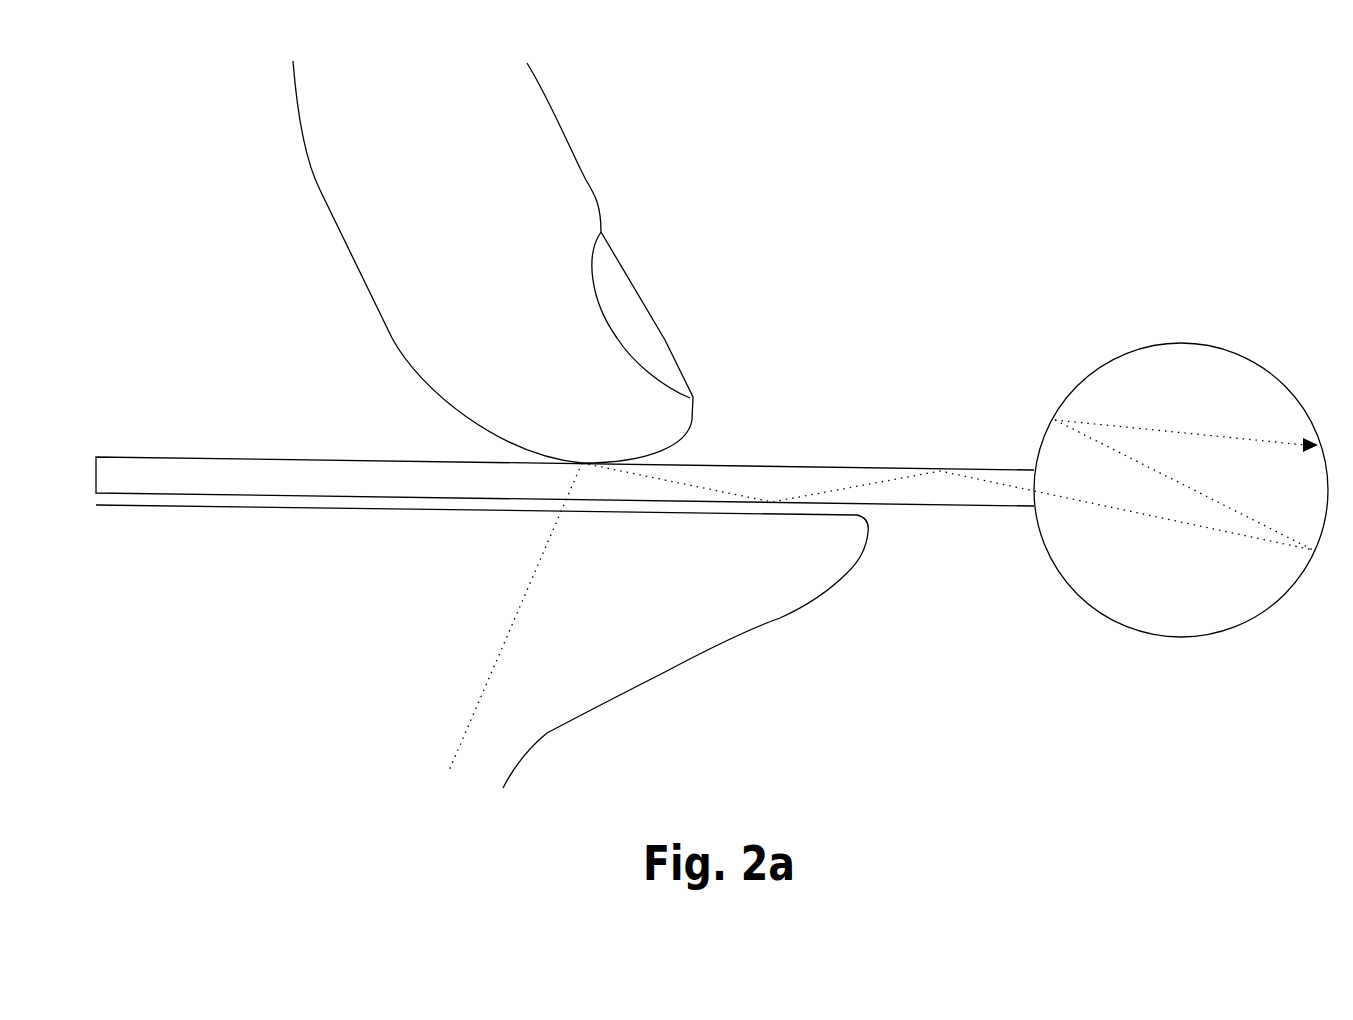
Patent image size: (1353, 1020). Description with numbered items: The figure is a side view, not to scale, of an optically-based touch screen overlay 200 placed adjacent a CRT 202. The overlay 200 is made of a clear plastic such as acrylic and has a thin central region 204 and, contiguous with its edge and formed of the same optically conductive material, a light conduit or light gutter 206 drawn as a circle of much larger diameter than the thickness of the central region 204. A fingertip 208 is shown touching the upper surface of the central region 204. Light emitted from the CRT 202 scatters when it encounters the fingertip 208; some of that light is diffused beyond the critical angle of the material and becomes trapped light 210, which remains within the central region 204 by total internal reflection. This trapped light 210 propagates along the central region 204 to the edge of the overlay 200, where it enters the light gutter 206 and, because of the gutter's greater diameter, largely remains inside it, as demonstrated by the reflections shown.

The optically-based touch screen overlay 200 is at (925, 203).
The CRT 202 is at (780, 620).
The central region 204 is at (882, 468).
The light gutter 206 is at (1098, 367).
The fingertip 208 is at (587, 183).
The trapped light 210 is at (1180, 519).